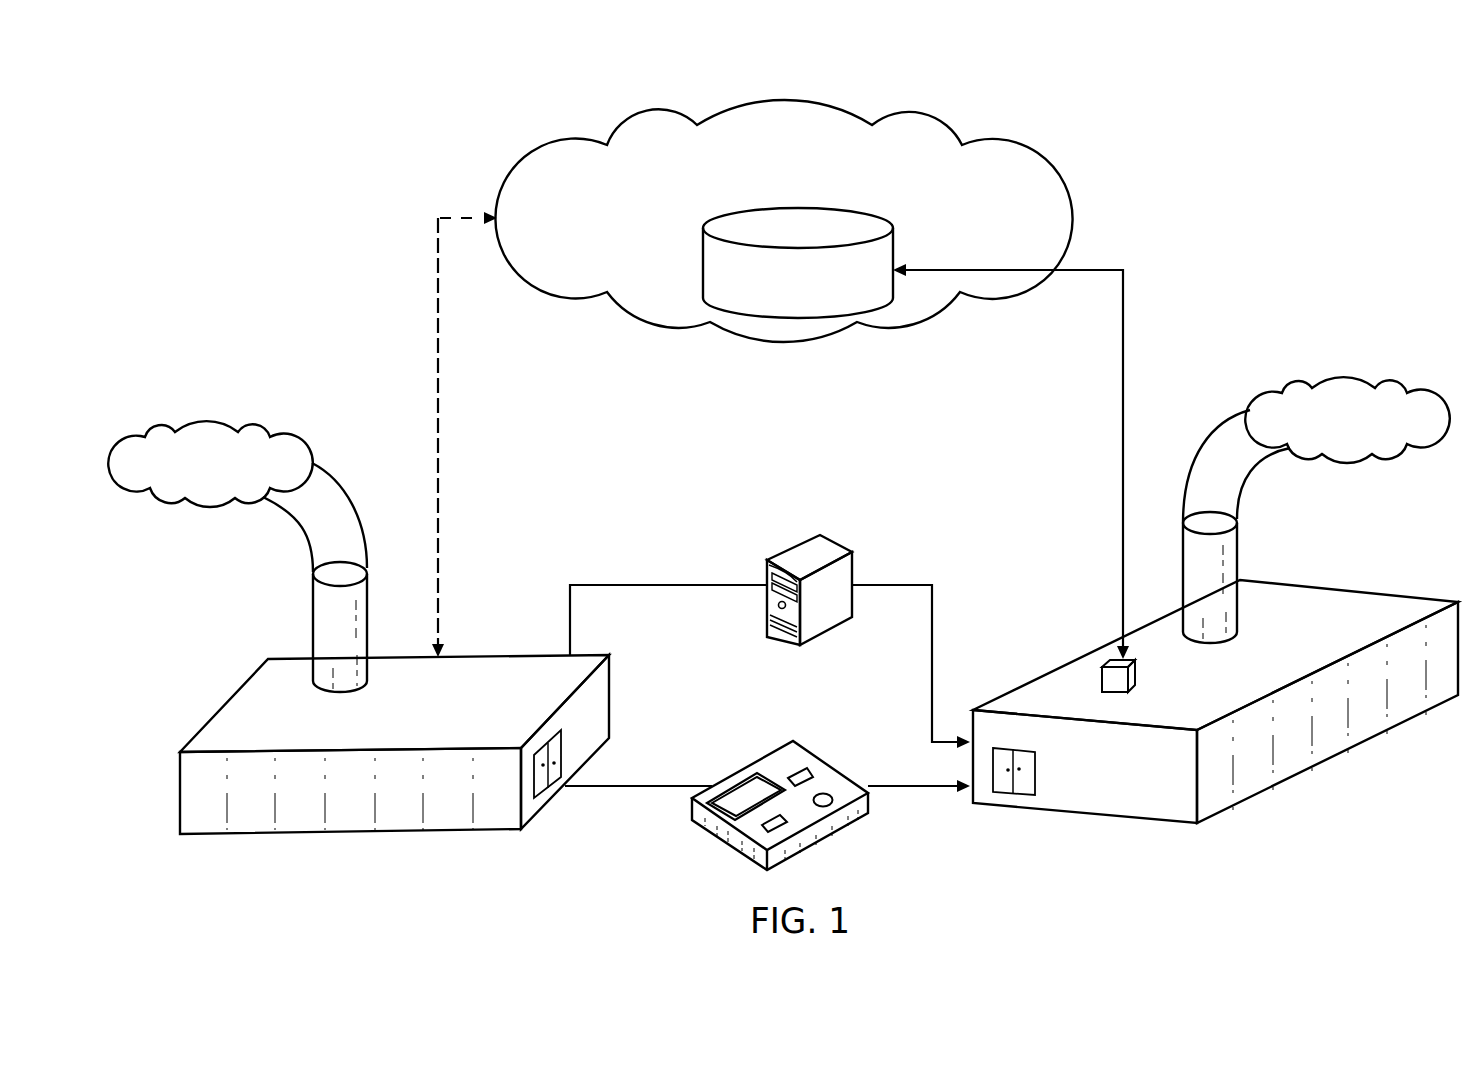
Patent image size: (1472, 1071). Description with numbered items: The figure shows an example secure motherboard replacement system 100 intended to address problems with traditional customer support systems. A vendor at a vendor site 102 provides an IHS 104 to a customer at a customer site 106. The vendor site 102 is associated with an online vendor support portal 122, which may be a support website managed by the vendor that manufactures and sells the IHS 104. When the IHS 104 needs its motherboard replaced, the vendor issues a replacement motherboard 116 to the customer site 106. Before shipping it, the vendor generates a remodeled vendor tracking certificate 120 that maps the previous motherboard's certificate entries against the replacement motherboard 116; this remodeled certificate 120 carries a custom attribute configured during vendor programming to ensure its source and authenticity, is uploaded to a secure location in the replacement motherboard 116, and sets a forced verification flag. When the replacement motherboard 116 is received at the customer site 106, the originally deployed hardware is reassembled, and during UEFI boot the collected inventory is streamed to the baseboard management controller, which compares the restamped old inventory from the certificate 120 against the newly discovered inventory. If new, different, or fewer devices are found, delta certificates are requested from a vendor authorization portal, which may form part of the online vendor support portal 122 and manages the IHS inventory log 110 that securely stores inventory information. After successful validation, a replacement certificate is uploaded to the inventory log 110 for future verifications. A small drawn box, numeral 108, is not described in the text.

The secure motherboard replacement system 100 is at (1268, 93).
The vendor site 102 is at (226, 705).
The IHS 104 is at (833, 542).
The customer site 106 is at (1352, 592).
The IHS delivered to customer site 108 is at (1128, 671).
The IHS inventory log 110 is at (870, 213).
The replacement motherboard 116 is at (837, 766).
The remodeled vendor tracking certificate 120 is at (731, 790).
The online vendor support portal 122 is at (930, 118).